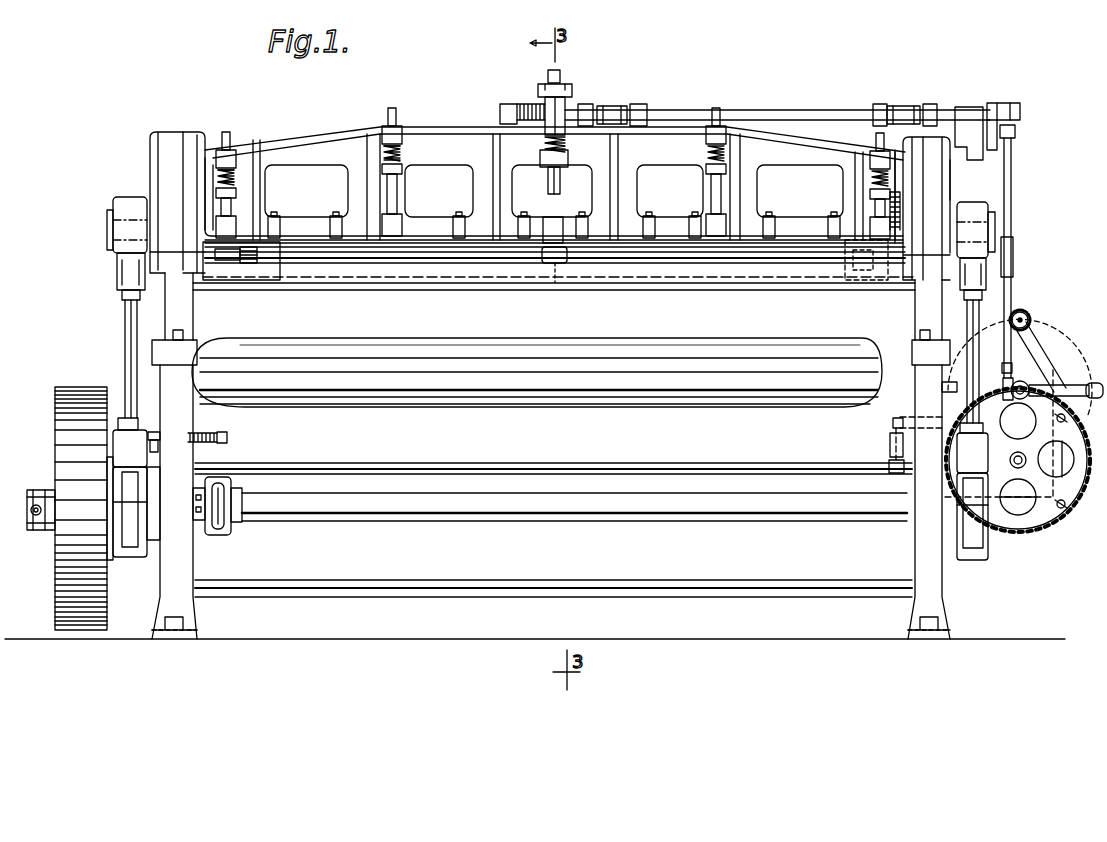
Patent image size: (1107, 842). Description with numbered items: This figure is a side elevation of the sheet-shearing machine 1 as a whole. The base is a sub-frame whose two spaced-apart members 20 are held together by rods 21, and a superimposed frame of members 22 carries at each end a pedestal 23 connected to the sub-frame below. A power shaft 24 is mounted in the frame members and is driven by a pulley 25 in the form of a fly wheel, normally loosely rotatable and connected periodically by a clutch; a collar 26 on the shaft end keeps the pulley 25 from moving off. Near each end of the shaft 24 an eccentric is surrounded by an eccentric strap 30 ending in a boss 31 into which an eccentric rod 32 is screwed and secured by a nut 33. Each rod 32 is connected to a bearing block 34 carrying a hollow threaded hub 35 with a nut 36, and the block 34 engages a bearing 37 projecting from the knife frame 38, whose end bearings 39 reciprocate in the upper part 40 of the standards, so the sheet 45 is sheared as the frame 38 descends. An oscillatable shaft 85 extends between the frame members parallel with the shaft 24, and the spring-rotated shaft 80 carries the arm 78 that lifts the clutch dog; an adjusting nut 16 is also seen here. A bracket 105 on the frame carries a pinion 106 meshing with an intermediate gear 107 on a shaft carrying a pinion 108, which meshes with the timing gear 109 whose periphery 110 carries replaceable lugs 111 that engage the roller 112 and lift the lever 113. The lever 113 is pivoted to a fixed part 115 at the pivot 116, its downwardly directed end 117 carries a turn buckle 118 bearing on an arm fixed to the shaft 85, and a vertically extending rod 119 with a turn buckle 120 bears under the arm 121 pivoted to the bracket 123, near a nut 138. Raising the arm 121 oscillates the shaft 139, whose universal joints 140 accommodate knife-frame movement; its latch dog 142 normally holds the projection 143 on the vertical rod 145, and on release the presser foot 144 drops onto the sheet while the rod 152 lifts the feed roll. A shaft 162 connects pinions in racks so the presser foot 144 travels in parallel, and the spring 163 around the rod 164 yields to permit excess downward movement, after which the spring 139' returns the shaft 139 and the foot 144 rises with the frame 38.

The machine 1 is at (817, 456).
The adjusting nut 16 is at (247, 264).
The sub-frame member 20 is at (210, 354).
The rod 21 is at (580, 384).
The superimposed frame member 22 is at (550, 323).
The pedestal 23 is at (182, 316).
The power shaft 24 is at (510, 522).
The pulley 25 is at (80, 390).
The collar 26 is at (37, 490).
The eccentric strap 30 is at (128, 459).
The boss 31 is at (123, 442).
The eccentric rod 32 is at (123, 318).
The nut 33 is at (117, 427).
The bearing block 34 is at (123, 198).
The hollow threaded hub 35 is at (117, 270).
The nut 36 is at (117, 291).
The bearing 37 is at (110, 223).
The knife frame 38 is at (338, 134).
The bearing 39 is at (158, 135).
The upper part of standard 40 is at (181, 140).
The sheet 45 is at (248, 544).
The arm 78 is at (152, 434).
The spring rotated shaft 80 is at (228, 437).
The oscillatable shaft 85 is at (535, 465).
The bracket 105 is at (1044, 344).
The pinion 106 is at (1031, 320).
The intermediate gear 107 is at (1042, 367).
The pinion 108 is at (1068, 380).
The timing gear 109 is at (1028, 527).
The gear 110 is at (1033, 522).
The replaceable lug 111 is at (1064, 506).
The roller 112 is at (1031, 382).
The lever 113 is at (1097, 397).
The fixed part of bracket 115 is at (962, 390).
The pivot 116 is at (1010, 365).
The downwardly directed end 117 is at (900, 418).
The turn buckle 118 is at (890, 447).
The vertically extending rod 119 is at (974, 316).
The turn buckle 120 is at (1013, 248).
The arm 121 is at (1006, 110).
The bracket 123 is at (967, 156).
The nut 138 is at (1012, 133).
The shaft 139 is at (777, 99).
The spring 139' is at (484, 111).
The universal joint 140 is at (617, 108).
The latch dog 142 is at (546, 98).
The projection 143 is at (564, 90).
The presser foot 144 is at (395, 271).
The vertical rod 145 is at (556, 184).
The rod 152 is at (878, 136).
The shaft 162 is at (340, 258).
The spring 163 is at (236, 168).
The rod 164 is at (232, 142).